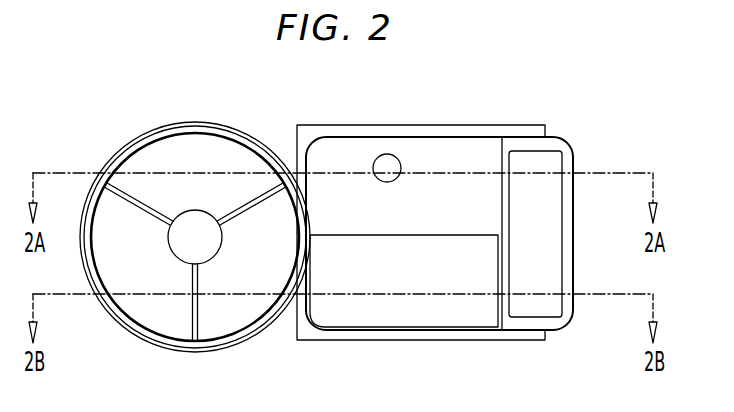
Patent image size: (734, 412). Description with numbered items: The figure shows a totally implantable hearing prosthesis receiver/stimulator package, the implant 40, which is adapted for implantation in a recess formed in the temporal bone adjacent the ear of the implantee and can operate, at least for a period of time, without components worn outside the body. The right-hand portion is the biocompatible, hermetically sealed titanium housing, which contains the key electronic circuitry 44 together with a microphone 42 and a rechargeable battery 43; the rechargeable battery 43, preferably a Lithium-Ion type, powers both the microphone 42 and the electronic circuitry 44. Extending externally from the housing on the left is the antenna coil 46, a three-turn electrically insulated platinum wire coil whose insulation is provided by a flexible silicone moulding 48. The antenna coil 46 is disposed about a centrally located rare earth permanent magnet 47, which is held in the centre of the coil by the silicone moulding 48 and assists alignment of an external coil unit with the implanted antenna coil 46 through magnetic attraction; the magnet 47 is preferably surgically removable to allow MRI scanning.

The implant 40 is at (570, 135).
The microphone 42 is at (385, 158).
The rechargeable battery 43 is at (355, 313).
The electronic circuitry 44 is at (550, 256).
The antenna coil 46 is at (190, 121).
The permanent magnet 47 is at (223, 240).
The silicone moulding 48 is at (152, 150).